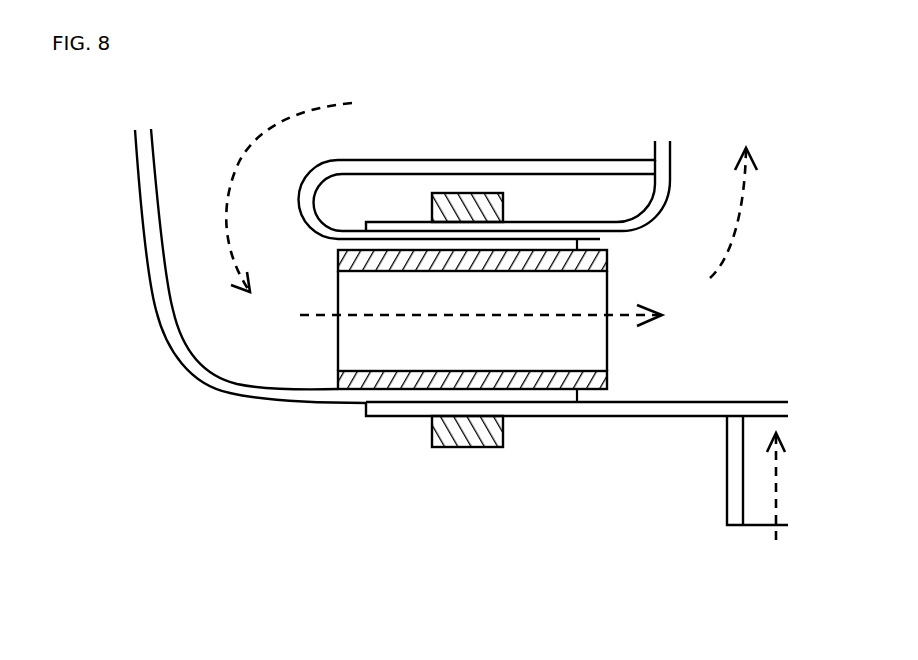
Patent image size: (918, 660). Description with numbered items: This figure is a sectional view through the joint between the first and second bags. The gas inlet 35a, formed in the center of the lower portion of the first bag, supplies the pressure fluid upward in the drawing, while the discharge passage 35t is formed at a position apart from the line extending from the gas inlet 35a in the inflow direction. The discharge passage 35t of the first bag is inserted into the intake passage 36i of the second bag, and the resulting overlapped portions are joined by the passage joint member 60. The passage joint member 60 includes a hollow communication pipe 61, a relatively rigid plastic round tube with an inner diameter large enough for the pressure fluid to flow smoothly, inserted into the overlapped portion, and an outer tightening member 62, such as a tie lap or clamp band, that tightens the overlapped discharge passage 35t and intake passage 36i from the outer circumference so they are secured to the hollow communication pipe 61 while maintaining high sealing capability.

The gas inlet 35a is at (727, 496).
The discharge passage 35t is at (537, 403).
The intake passage 36i is at (390, 417).
The passage joint member 60 is at (413, 492).
The hollow communication pipe 61 is at (607, 260).
The outer tightening member 62 is at (483, 447).